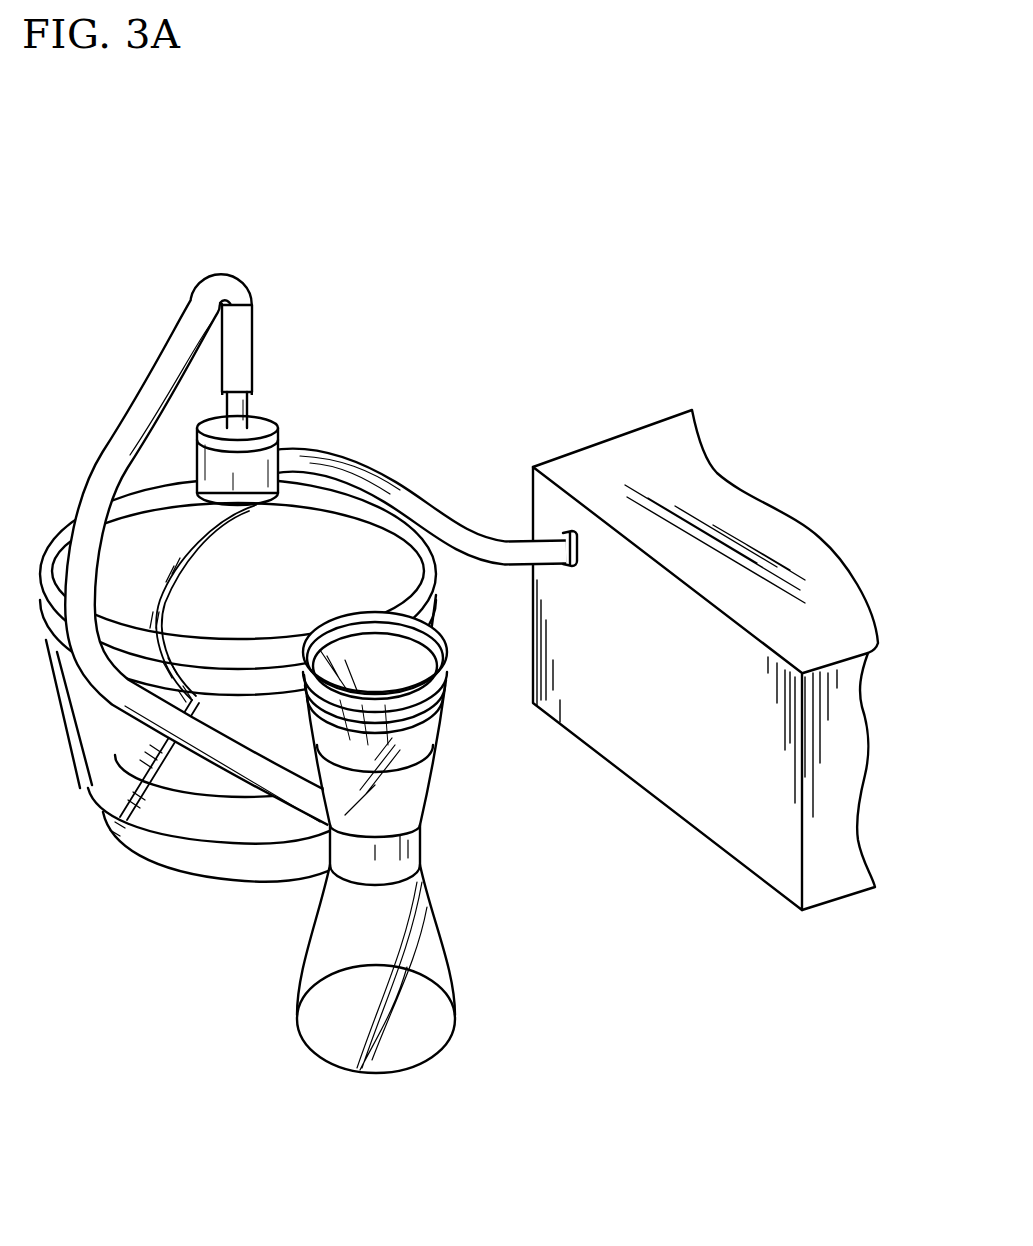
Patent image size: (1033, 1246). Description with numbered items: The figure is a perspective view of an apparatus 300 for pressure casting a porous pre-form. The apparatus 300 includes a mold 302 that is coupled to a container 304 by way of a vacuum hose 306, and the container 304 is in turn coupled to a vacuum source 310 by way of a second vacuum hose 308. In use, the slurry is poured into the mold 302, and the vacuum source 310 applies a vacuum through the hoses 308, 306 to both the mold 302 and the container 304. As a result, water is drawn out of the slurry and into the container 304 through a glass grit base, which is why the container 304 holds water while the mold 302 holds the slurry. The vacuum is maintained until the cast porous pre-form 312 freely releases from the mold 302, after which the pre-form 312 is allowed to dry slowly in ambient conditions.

The apparatus 300 is at (455, 616).
The mold 302 is at (437, 628).
The container 304 is at (40, 535).
The vacuum hose 306 is at (130, 397).
The vacuum hose 308 is at (375, 468).
The vacuum source 310 is at (753, 847).
The porous pre-form 312 is at (413, 737).